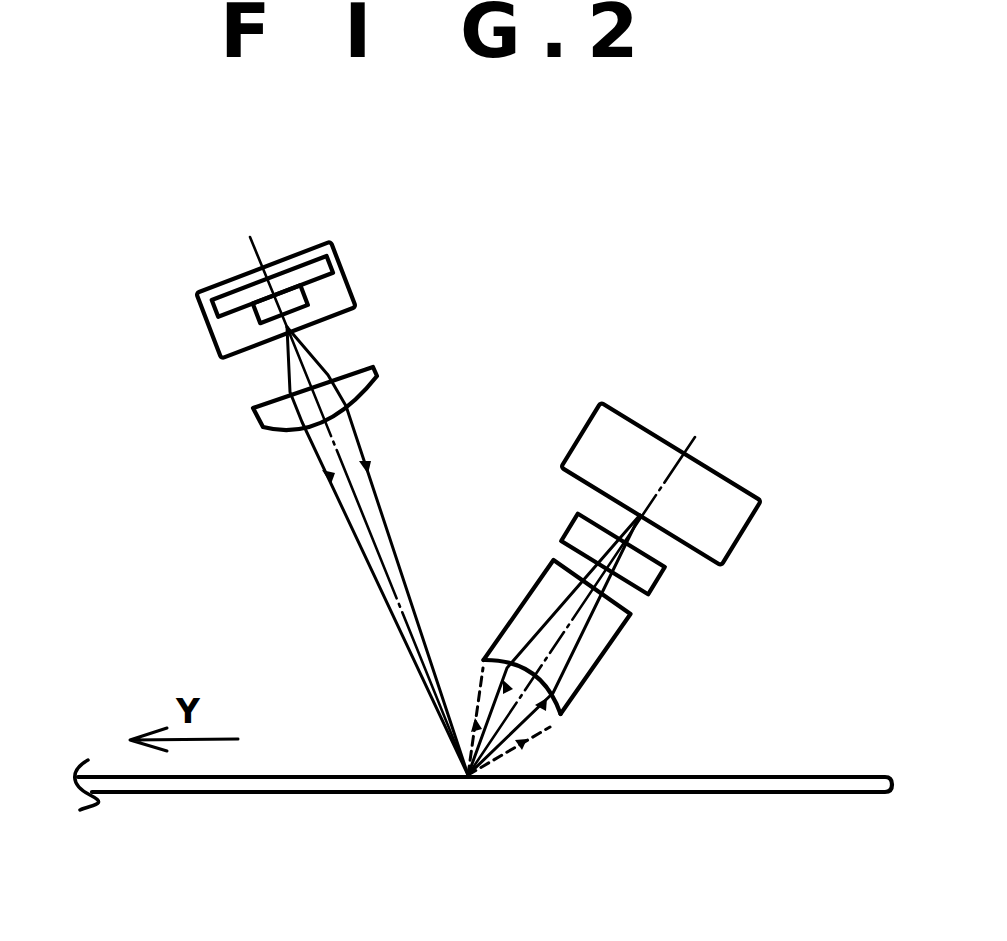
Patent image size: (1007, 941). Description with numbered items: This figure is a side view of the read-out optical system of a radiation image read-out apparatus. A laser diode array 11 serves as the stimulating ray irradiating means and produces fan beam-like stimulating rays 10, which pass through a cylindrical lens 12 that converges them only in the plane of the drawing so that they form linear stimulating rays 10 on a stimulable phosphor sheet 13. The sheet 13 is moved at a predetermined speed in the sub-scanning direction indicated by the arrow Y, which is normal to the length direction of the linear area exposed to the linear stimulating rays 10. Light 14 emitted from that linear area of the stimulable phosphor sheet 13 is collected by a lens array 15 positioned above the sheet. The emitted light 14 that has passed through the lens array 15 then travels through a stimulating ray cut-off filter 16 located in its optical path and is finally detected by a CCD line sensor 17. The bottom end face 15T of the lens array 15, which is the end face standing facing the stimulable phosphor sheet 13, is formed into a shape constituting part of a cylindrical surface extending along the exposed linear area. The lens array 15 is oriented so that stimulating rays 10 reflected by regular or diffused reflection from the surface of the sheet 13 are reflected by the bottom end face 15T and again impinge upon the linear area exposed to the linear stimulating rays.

The stimulating rays 10 is at (322, 362).
The laser diode array 11 is at (356, 270).
The cylindrical lens 12 is at (373, 373).
The stimulable phosphor sheet 13 is at (808, 775).
The emitted light 14 is at (557, 734).
The lens array 15 is at (628, 658).
The bottom end face 15T is at (566, 710).
The stimulating ray cut-off filter 16 is at (654, 580).
The CCD line sensor 17 is at (745, 512).